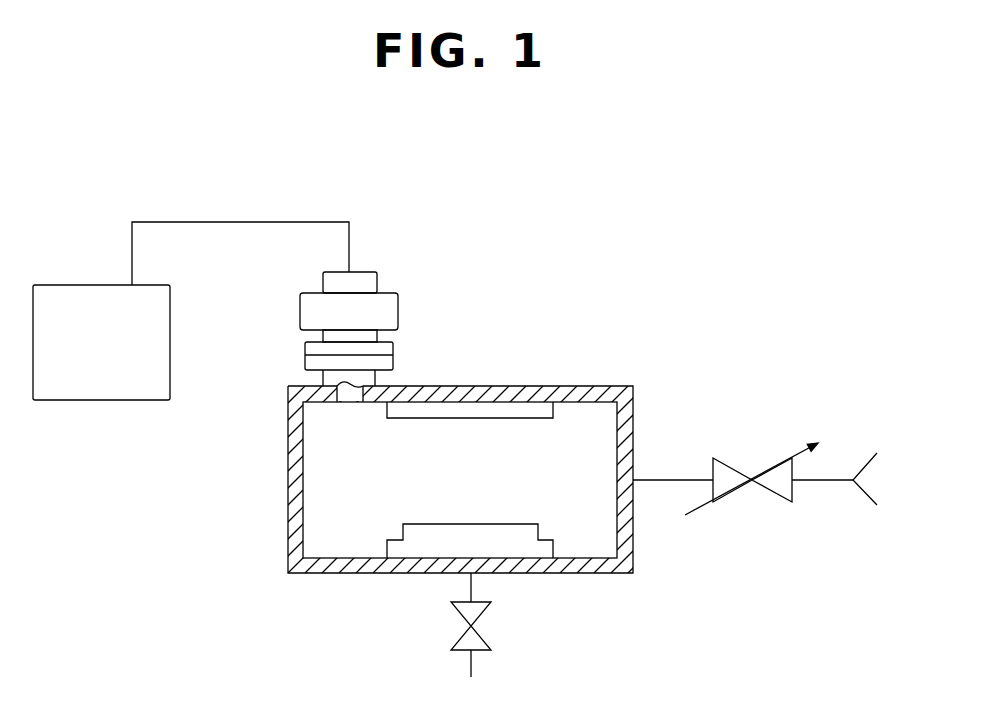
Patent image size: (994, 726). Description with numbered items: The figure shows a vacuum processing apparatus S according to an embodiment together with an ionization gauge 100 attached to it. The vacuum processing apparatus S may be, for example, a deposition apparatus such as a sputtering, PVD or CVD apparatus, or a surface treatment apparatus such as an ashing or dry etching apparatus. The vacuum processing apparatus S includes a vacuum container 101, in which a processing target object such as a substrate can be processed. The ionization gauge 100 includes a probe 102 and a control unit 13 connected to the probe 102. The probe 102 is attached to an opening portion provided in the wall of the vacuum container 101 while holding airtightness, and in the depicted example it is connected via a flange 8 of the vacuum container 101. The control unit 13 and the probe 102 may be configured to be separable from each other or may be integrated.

The ionization gauge 100 is at (432, 283).
The control unit 13 is at (155, 320).
The probe 102 is at (358, 272).
The flange 8 is at (393, 355).
The vacuum container 101 is at (635, 412).
The vacuum processing apparatus S is at (595, 370).